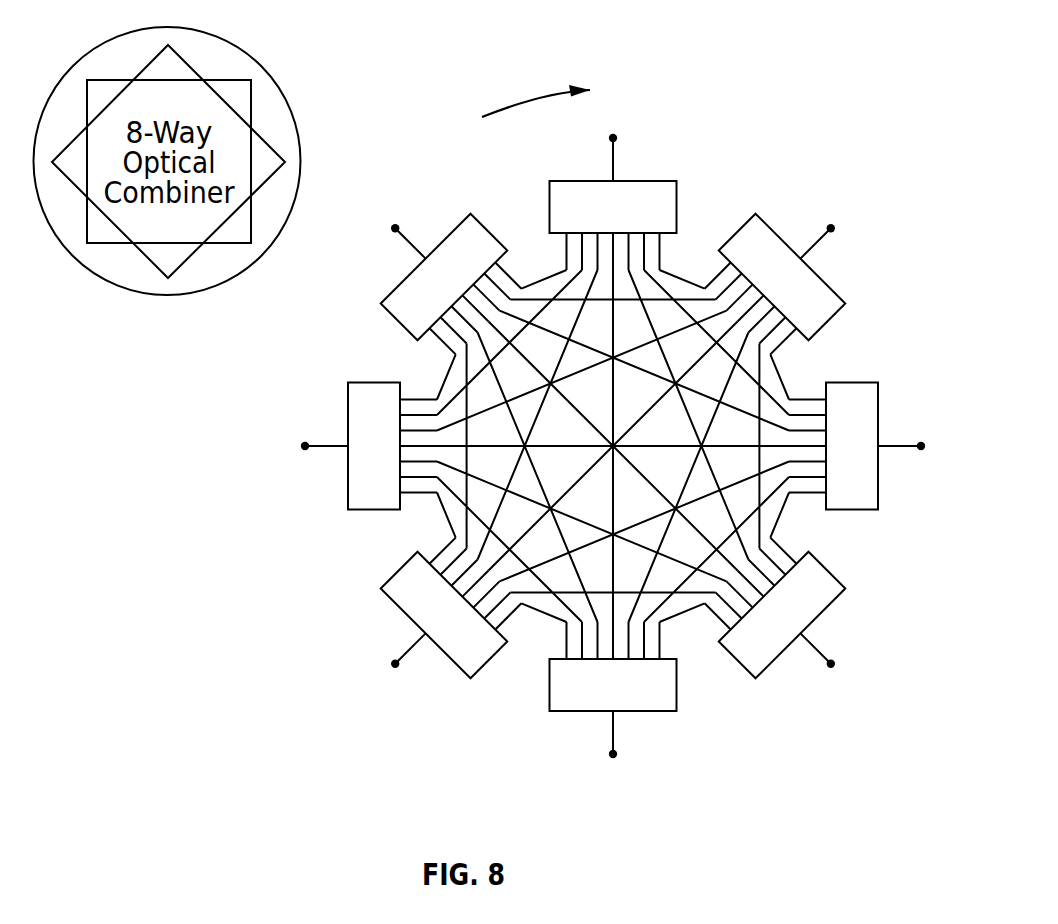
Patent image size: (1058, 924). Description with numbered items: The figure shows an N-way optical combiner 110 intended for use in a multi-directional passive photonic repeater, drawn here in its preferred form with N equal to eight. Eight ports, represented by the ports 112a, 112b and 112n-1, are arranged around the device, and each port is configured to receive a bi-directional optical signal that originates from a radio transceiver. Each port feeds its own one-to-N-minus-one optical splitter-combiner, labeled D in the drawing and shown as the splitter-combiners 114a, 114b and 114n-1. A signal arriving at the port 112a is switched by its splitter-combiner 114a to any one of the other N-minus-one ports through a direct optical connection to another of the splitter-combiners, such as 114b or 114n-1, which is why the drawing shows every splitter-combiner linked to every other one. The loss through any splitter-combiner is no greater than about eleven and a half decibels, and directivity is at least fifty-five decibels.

The N-way optical combiner 110 is at (795, 52).
The port 112a is at (412, 247).
The port 112b is at (613, 162).
The port 112n-1 is at (327, 448).
The 1:N−1 optical splitter-combiner 114a is at (491, 232).
The 1:N−1 optical splitter-combiner 114b is at (678, 205).
The 1:N−1 optical splitter-combiner 114n-1 is at (373, 380).